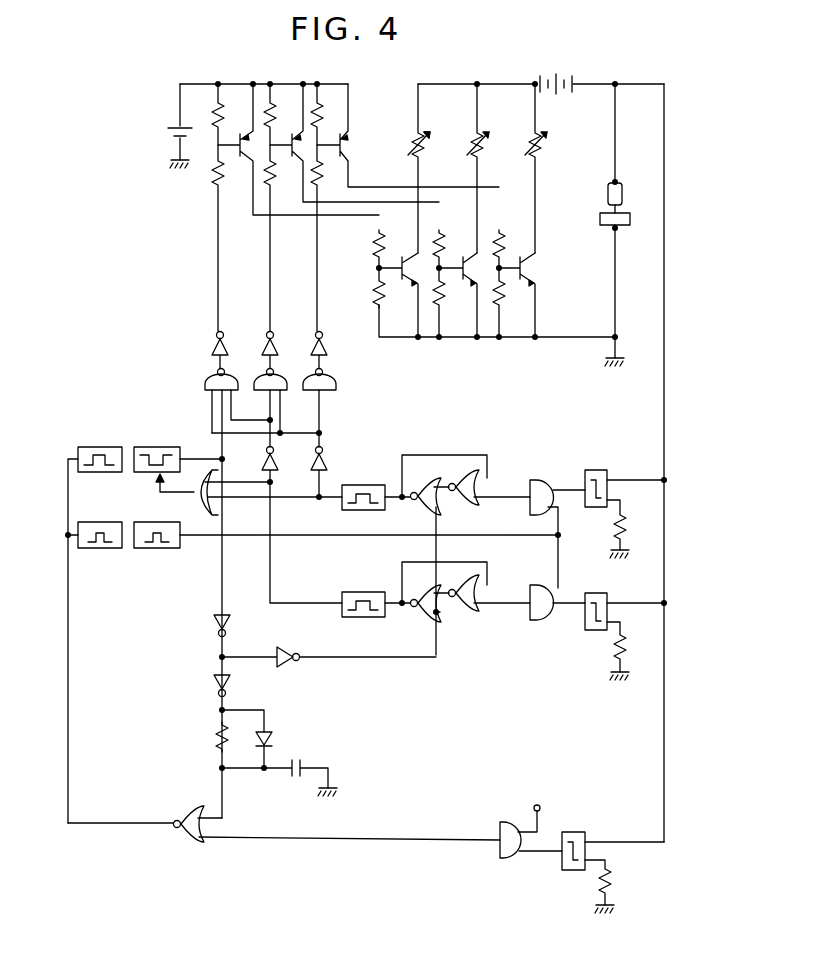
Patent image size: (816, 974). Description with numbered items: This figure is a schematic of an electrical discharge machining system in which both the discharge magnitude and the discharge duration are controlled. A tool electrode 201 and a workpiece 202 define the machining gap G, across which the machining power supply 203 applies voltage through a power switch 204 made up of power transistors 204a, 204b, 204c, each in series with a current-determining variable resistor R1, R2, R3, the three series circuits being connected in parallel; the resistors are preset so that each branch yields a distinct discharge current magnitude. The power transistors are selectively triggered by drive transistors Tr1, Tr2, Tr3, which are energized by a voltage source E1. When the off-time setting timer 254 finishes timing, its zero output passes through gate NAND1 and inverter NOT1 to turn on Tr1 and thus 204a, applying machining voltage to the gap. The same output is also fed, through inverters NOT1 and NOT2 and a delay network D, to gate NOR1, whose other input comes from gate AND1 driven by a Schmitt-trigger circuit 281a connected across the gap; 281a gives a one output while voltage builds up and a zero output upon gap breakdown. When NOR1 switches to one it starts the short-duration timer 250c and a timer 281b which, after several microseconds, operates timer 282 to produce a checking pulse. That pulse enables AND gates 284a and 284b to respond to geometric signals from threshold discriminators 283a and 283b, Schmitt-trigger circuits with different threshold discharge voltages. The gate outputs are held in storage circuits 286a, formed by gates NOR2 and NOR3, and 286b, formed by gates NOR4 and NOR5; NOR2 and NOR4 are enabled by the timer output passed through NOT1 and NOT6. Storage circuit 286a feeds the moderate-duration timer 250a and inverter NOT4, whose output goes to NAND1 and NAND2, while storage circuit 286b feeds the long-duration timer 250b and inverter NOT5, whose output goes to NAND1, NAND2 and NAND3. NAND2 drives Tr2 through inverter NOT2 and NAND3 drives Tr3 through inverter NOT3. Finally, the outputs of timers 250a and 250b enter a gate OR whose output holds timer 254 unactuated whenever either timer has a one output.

The voltage source E1 is at (165, 126).
The drive transistor Tr1 is at (238, 162).
The drive transistor Tr2 is at (286, 168).
The drive transistor Tr3 is at (340, 163).
The current-determining variable resistor R1 is at (405, 168).
The current-determining variable resistor R2 is at (464, 168).
The current-determining variable resistor R3 is at (522, 168).
The machining power supply 203 is at (562, 70).
The tool electrode 201 is at (607, 192).
The workpiece 202 is at (600, 219).
The machining gap G is at (624, 208).
The power switch 204 is at (527, 368).
The power transistor 204a is at (390, 279).
The power transistor 204b is at (472, 277).
The power transistor 204c is at (530, 268).
The inverter NOT1 is at (217, 338).
The inverter NOT2 is at (262, 334).
The inverter NOT3 is at (336, 333).
The inverter NOT4 is at (330, 473).
The inverter NOT5 is at (323, 454).
The inverter NOT6 is at (329, 669).
The NAND gate NAND1 is at (204, 383).
The NAND gate NAND2 is at (284, 392).
The NAND gate NAND3 is at (331, 384).
The OR gate OR is at (249, 500).
The timer 250a is at (374, 616).
The timer 250b is at (372, 508).
The timer 250c is at (94, 623).
The off-time setting timer 254 is at (178, 448).
The Schmitt-trigger circuit 281a is at (562, 870).
The timer 281b is at (95, 548).
The timer 282 is at (346, 548).
The threshold discriminator 283a is at (622, 624).
The threshold discriminator 283b is at (621, 501).
The AND gate 284a is at (549, 616).
The AND gate 284b is at (549, 522).
The storage circuit 286a is at (447, 603).
The storage circuit 286b is at (464, 542).
The NOR gate NOR1 is at (284, 838).
The NOR gate NOR2 is at (417, 586).
The NOR gate NOR3 is at (482, 604).
The NOR gate NOR4 is at (424, 488).
The NOR gate NOR5 is at (428, 450).
The AND gate AND1 is at (501, 854).
The delay network D is at (255, 739).